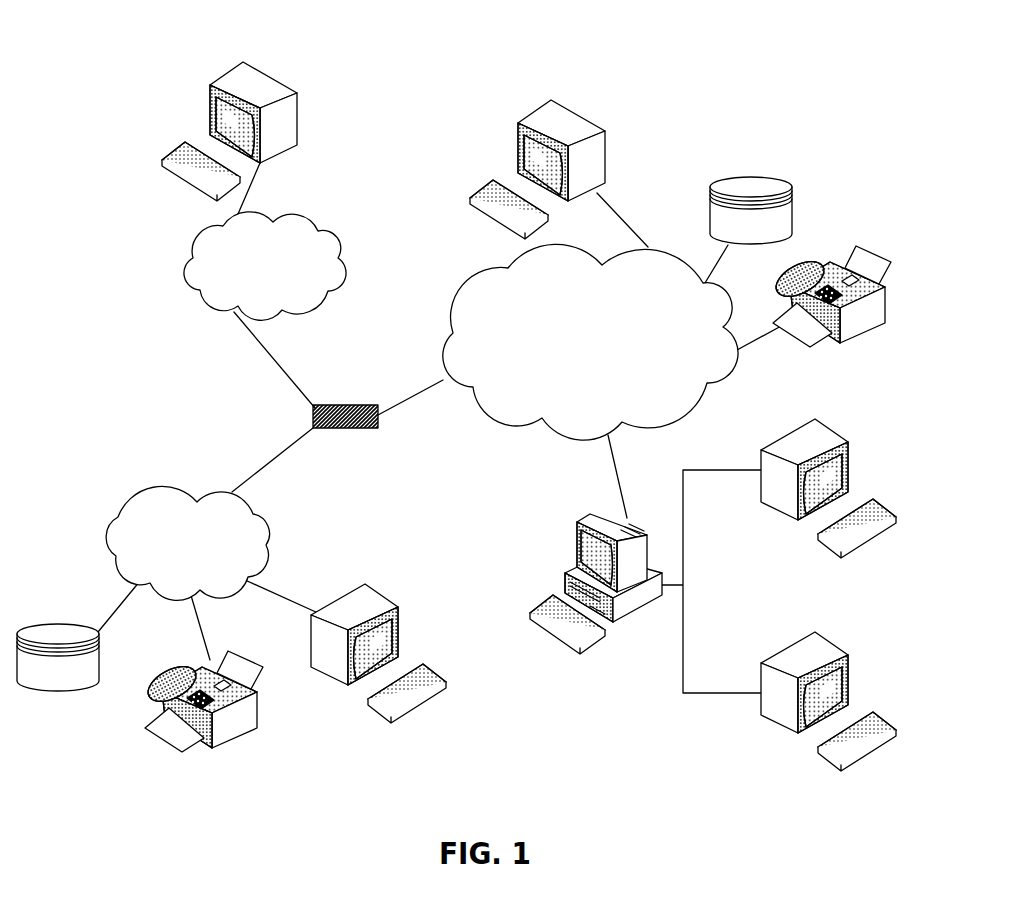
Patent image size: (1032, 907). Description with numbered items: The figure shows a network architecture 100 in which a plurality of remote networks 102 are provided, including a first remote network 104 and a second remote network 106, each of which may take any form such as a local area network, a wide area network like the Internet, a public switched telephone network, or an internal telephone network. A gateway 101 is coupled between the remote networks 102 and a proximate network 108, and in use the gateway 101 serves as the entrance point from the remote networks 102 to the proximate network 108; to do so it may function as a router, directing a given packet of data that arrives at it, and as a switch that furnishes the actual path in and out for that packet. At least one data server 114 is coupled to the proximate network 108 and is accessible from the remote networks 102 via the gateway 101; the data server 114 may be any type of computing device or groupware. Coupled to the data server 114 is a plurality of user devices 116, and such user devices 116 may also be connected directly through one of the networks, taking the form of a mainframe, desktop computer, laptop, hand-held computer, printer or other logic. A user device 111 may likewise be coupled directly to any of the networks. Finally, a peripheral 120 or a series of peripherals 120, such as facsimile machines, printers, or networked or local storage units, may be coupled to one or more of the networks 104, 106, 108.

The architecture 100 is at (130, 40).
The gateway 101 is at (328, 403).
The remote networks 102 is at (160, 332).
The first remote network 104 is at (118, 517).
The second remote network 106 is at (337, 232).
The proximate network 108 is at (698, 412).
The user device 111 is at (603, 137).
The data server 114 is at (577, 538).
The user devices 116 is at (297, 103).
The peripheral 120 is at (790, 186).